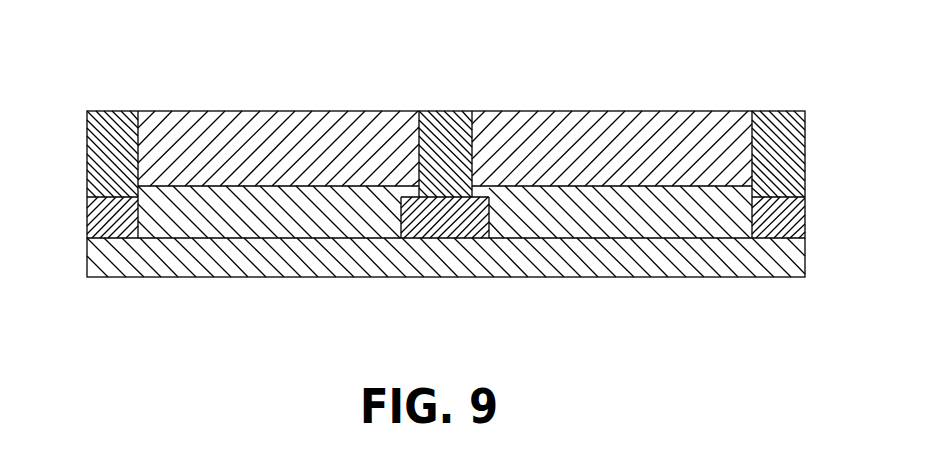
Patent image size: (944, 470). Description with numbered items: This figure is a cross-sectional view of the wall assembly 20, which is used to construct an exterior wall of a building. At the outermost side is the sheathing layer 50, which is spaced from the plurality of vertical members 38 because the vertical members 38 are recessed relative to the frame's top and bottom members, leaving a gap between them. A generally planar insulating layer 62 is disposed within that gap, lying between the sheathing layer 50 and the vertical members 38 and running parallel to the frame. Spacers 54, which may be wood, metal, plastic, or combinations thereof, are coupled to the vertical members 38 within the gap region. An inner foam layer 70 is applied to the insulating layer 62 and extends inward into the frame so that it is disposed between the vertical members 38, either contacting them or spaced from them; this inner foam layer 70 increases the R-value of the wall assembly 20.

The wall assembly 20 is at (808, 87).
The vertical members 38 is at (121, 118).
The sheathing layer 50 is at (750, 262).
The spacer 54 is at (103, 220).
The insulating layer 62 is at (278, 223).
The inner foam layer 70 is at (253, 117).